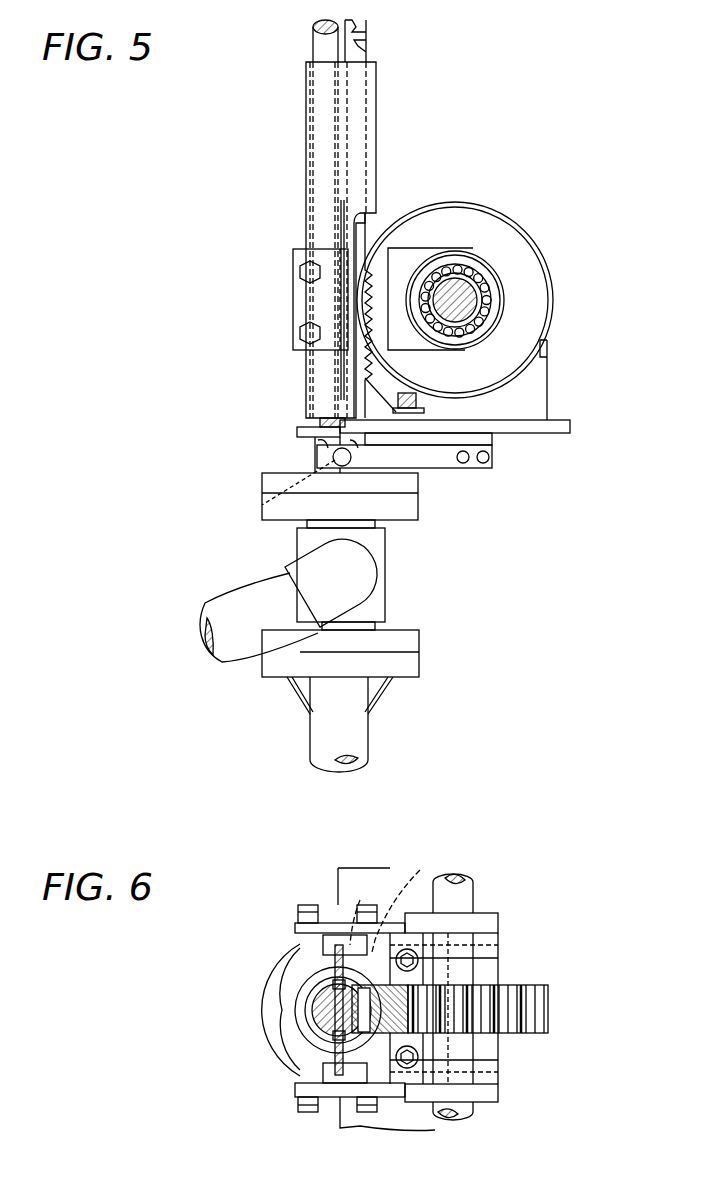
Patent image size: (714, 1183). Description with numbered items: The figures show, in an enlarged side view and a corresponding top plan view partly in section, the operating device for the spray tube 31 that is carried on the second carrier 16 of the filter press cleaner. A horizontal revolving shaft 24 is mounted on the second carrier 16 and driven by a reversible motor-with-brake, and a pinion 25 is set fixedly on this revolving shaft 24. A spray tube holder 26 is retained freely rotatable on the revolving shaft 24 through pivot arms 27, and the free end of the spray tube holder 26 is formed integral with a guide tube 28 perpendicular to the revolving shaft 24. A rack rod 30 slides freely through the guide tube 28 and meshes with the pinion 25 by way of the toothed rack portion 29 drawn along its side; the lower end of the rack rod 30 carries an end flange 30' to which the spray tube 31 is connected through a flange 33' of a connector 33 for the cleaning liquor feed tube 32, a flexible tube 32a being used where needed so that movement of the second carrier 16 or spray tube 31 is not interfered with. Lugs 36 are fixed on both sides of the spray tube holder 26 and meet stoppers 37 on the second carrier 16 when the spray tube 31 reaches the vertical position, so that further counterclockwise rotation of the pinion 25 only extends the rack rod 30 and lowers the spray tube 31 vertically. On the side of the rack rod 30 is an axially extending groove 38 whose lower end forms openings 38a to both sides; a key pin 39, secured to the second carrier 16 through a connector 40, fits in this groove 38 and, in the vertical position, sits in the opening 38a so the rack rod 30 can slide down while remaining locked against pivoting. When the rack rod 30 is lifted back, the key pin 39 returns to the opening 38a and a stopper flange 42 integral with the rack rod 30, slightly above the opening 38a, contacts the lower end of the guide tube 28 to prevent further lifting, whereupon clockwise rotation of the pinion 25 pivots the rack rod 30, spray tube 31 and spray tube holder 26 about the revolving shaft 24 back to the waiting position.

In FIG. 5, the second carrier 16 is at (564, 434).
In FIG. 6, the second carrier 16 is at (338, 1118).
In FIG. 5, the horizontal revolving shaft 24 is at (470, 297).
In FIG. 6, the horizontal revolving shaft 24 is at (458, 885).
In FIG. 5, the pinion 25 is at (470, 212).
In FIG. 6, the pinion 25 is at (522, 990).
In FIG. 5, the spray tube holder 26 is at (293, 301).
In FIG. 6, the spray tube holder 26 is at (330, 923).
In FIG. 5, the pivot arm 27 is at (411, 248).
In FIG. 6, the pivot arm 27 is at (498, 1093).
In FIG. 5, the guide tube 28 is at (376, 112).
In FIG. 6, the guide tube 28 is at (300, 985).
In FIG. 5, the rack 29 is at (370, 218).
In FIG. 6, the rack 29 is at (407, 896).
In FIG. 5, the rack rod 30 is at (300, 219).
In FIG. 6, the rack rod 30 is at (286, 1031).
In FIG. 5, the end flange 30' is at (237, 481).
In FIG. 5, the spray tube 31 is at (368, 736).
In FIG. 5, the cleaning liquor feed tube 32 is at (222, 594).
In FIG. 5, the flexible tube 32a is at (232, 668).
In FIG. 5, the connector 33 is at (363, 575).
In FIG. 5, the flange 33' is at (360, 579).
In FIG. 5, the lug 36 is at (336, 376).
In FIG. 6, the lug 36 is at (338, 950).
In FIG. 5, the stopper 37 is at (405, 412).
In FIG. 6, the stopper 37 is at (362, 940).
In FIG. 5, the groove 38 is at (358, 47).
In FIG. 6, the groove 38 is at (330, 1000).
In FIG. 5, the opening 38a is at (318, 454).
In FIG. 5, the key pin 39 is at (316, 492).
In FIG. 6, the key pin 39 is at (305, 975).
In FIG. 5, the connector 40 is at (443, 468).
In FIG. 5, the stopper flange 42 is at (298, 428).
In FIG. 6, the stopper flange 42 is at (333, 1035).